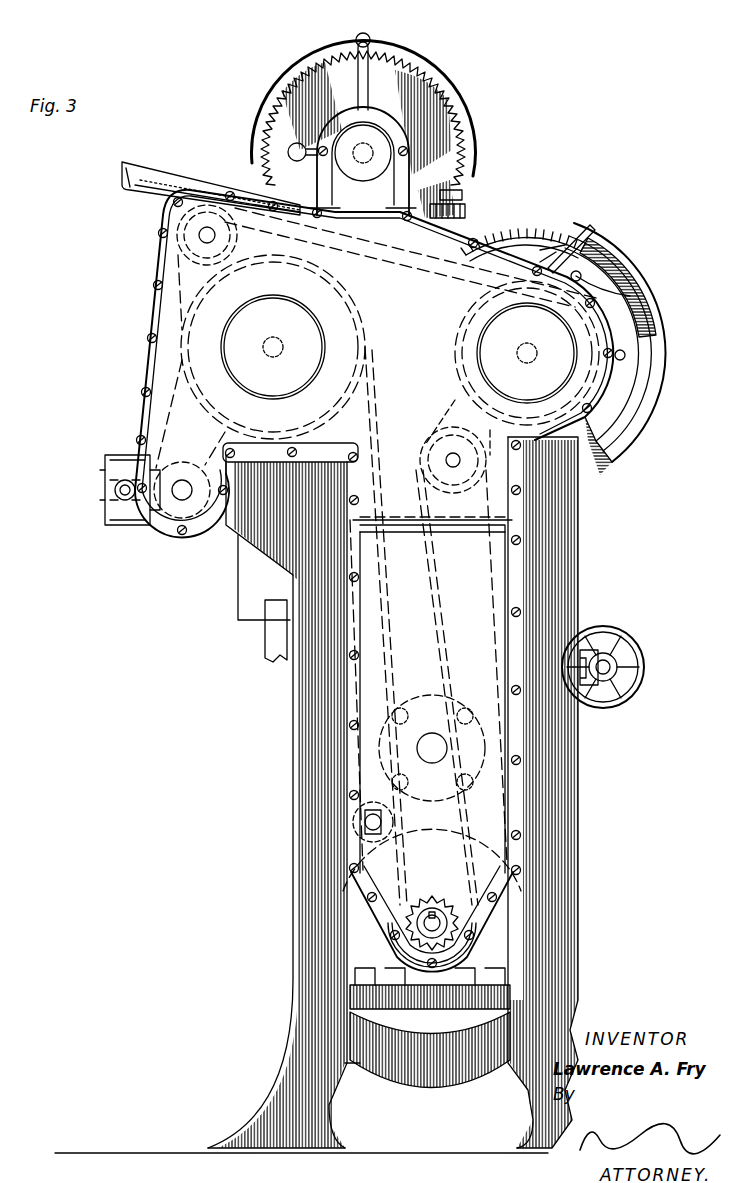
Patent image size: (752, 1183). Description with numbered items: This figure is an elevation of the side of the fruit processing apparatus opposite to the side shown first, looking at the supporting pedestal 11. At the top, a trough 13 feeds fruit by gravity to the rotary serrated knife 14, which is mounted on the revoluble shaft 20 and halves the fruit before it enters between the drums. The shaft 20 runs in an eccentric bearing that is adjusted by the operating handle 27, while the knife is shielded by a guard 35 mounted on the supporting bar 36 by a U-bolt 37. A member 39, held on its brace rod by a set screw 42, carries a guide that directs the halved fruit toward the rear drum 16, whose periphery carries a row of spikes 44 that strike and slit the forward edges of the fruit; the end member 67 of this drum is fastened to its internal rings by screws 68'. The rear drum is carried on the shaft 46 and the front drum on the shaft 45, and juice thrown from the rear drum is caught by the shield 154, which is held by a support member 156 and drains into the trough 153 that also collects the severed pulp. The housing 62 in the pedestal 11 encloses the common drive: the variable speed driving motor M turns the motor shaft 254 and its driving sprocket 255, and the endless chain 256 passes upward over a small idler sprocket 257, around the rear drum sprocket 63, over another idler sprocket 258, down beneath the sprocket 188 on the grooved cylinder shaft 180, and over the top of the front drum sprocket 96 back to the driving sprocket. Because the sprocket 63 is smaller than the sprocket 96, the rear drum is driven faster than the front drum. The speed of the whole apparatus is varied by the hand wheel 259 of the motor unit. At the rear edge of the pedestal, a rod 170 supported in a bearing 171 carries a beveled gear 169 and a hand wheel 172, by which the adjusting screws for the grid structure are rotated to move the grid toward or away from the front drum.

The supporting pedestal 11 is at (570, 552).
The trough 13 is at (140, 183).
The rotary serrated knife 14 is at (455, 138).
The rear drum 16 is at (544, 226).
The revoluble shaft 20 is at (363, 160).
The operating handle 27 is at (303, 160).
The guard 35 is at (470, 108).
The supporting bar 36 is at (368, 78).
The U-bolt 37 is at (368, 38).
The member 39 is at (452, 220).
The set screw 42 is at (462, 196).
The spike 44 is at (585, 226).
The front drum shaft 45 is at (280, 350).
The rear drum shaft 46 is at (520, 345).
The housing 62 is at (470, 921).
The rear drum sprocket 63 is at (458, 370).
The end member 67 is at (560, 258).
The screw 68' is at (629, 315).
The front drum sprocket 96 is at (360, 388).
The trough 153 is at (236, 590).
The shield 154 is at (650, 405).
The support member 156 is at (595, 258).
The beveled gear 169 is at (612, 663).
The rod 170 is at (606, 665).
The bearing 171 is at (596, 655).
The hand wheel 172 is at (645, 680).
The shaft 180 is at (185, 495).
The sprocket 188 is at (185, 470).
The motor shaft 254 is at (400, 925).
The driving sprocket 255 is at (432, 893).
The endless chain 256 is at (438, 618).
The idler sprocket 257 is at (468, 480).
The idler sprocket 258 is at (238, 235).
The hand wheel 259 is at (352, 822).
The variable speed driving motor M is at (480, 783).